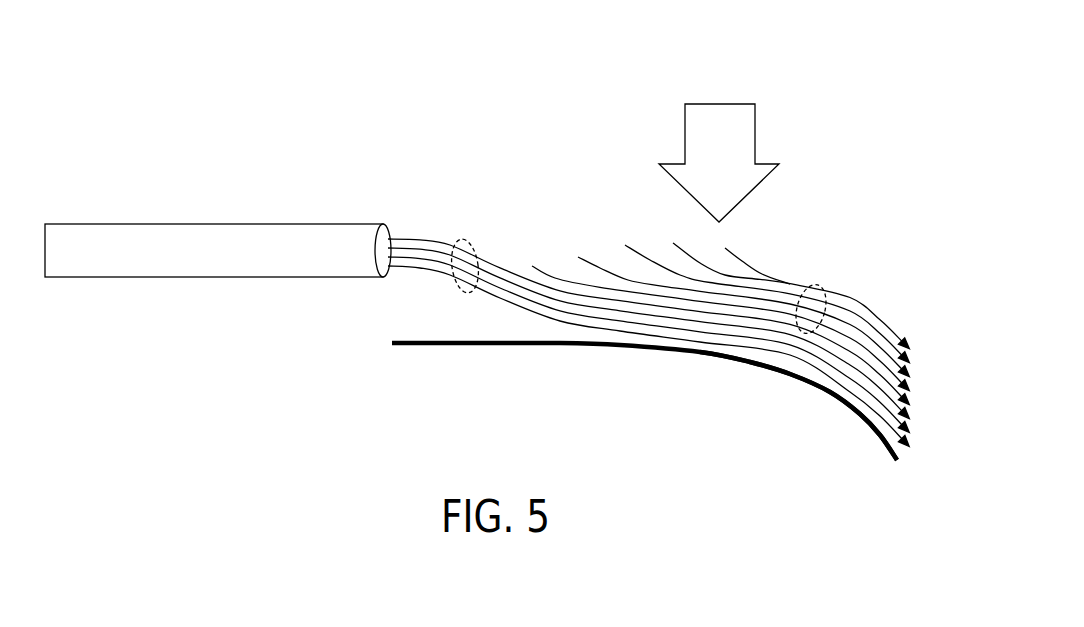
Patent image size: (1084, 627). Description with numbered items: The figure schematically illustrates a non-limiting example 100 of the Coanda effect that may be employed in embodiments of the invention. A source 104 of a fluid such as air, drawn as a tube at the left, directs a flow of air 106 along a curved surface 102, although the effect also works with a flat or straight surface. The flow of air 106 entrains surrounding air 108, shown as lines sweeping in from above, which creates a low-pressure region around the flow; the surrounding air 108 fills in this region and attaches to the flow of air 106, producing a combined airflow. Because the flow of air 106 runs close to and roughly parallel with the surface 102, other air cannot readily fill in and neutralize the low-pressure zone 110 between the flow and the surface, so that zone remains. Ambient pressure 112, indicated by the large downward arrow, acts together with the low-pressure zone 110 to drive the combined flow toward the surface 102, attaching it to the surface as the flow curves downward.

The example of a Coanda effect 100 is at (762, 67).
The curved surface 102 is at (427, 339).
The source of a fluid 104 is at (268, 223).
The flow of air 106 is at (470, 237).
The surrounding air 108 is at (815, 284).
The low-pressure zone 110 is at (722, 357).
The ambient pressure 112 is at (742, 153).